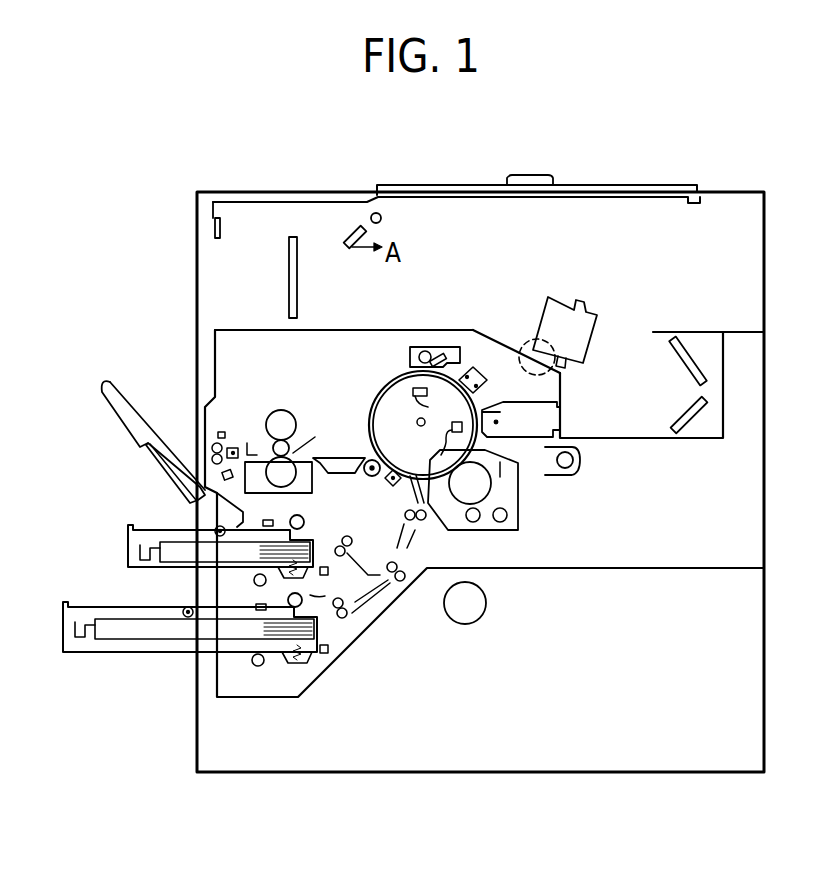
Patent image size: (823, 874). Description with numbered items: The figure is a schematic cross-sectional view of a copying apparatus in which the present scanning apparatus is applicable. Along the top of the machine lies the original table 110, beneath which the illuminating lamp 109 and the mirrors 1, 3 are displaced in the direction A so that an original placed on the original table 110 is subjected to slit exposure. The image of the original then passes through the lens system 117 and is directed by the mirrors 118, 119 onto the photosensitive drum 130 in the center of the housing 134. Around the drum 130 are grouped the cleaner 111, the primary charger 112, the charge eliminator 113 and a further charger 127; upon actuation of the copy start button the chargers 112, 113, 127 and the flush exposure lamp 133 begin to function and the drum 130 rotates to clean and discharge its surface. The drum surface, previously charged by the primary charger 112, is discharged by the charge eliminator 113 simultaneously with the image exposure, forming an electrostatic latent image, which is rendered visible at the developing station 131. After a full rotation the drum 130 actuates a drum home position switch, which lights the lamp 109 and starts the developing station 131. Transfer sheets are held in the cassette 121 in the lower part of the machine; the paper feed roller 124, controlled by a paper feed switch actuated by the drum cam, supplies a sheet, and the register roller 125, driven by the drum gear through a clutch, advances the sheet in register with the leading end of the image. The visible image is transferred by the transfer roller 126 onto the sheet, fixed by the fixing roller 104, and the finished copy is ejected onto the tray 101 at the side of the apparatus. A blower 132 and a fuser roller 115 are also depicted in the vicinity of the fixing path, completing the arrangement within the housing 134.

The mirror 1 is at (340, 233).
The mirror 3 is at (297, 296).
The tray 101 is at (115, 392).
The fixing roller 104 is at (281, 409).
The illuminating lamp 109 is at (381, 218).
The original table 110 is at (401, 185).
The cleaner 111 is at (433, 347).
The primary charger 112 is at (483, 335).
The charge eliminator 113 is at (486, 410).
The fuser roller 115 is at (530, 342).
The lens system 117 is at (591, 308).
The mirror 118 is at (673, 347).
The mirror 119 is at (680, 419).
The cassette 121 is at (128, 550).
The paper feed roller 124 is at (305, 522).
The register roller 125 is at (408, 532).
The transfer roller 126 is at (365, 476).
The charger 127 is at (395, 484).
The drum 130 is at (412, 442).
The developing station 131 is at (457, 493).
The blower 132 is at (487, 605).
The flush exposure lamp 133 is at (574, 462).
The housing 134 is at (563, 757).